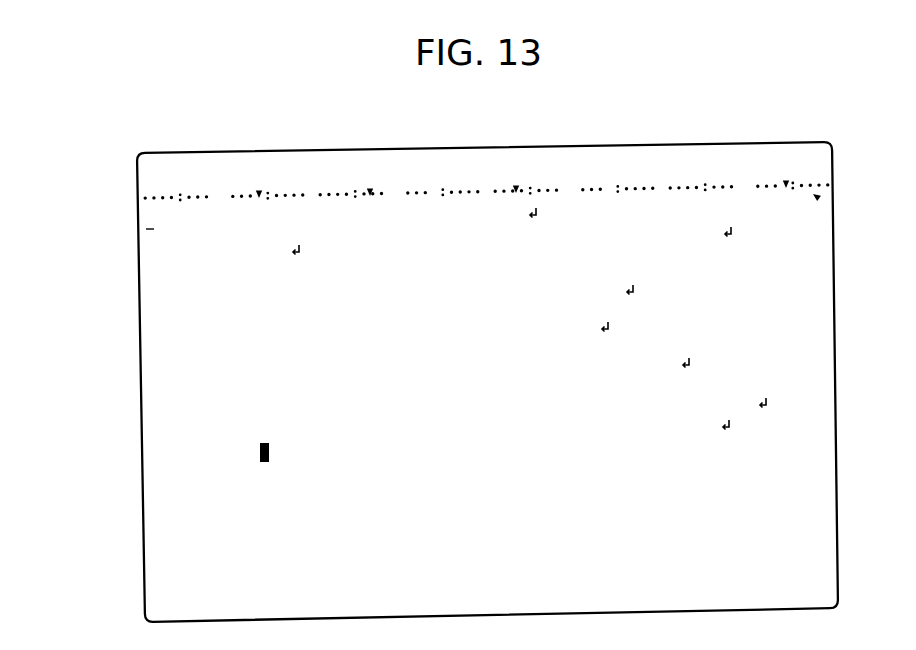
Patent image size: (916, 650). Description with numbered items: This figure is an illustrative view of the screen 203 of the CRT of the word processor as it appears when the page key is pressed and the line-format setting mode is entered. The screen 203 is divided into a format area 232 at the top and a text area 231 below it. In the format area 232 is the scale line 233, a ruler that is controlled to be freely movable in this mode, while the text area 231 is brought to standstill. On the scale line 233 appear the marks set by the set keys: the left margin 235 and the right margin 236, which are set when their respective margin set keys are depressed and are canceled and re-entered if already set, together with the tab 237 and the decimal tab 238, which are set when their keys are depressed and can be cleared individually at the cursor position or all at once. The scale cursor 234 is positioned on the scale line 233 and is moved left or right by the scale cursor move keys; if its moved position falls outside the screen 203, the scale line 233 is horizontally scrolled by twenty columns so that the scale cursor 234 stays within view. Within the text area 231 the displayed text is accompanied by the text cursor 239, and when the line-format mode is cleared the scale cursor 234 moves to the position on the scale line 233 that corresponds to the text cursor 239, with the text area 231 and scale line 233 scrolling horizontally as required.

The screen 203 is at (788, 484).
The text area 231 is at (805, 360).
The format area 232 is at (692, 160).
The scale line 233 is at (165, 198).
The scale cursor 234 is at (815, 196).
The left margin 235 is at (259, 193).
The right margin 236 is at (786, 184).
The tab 237 is at (370, 191).
The decimal tab 238 is at (516, 188).
The text cursor 239 is at (259, 461).